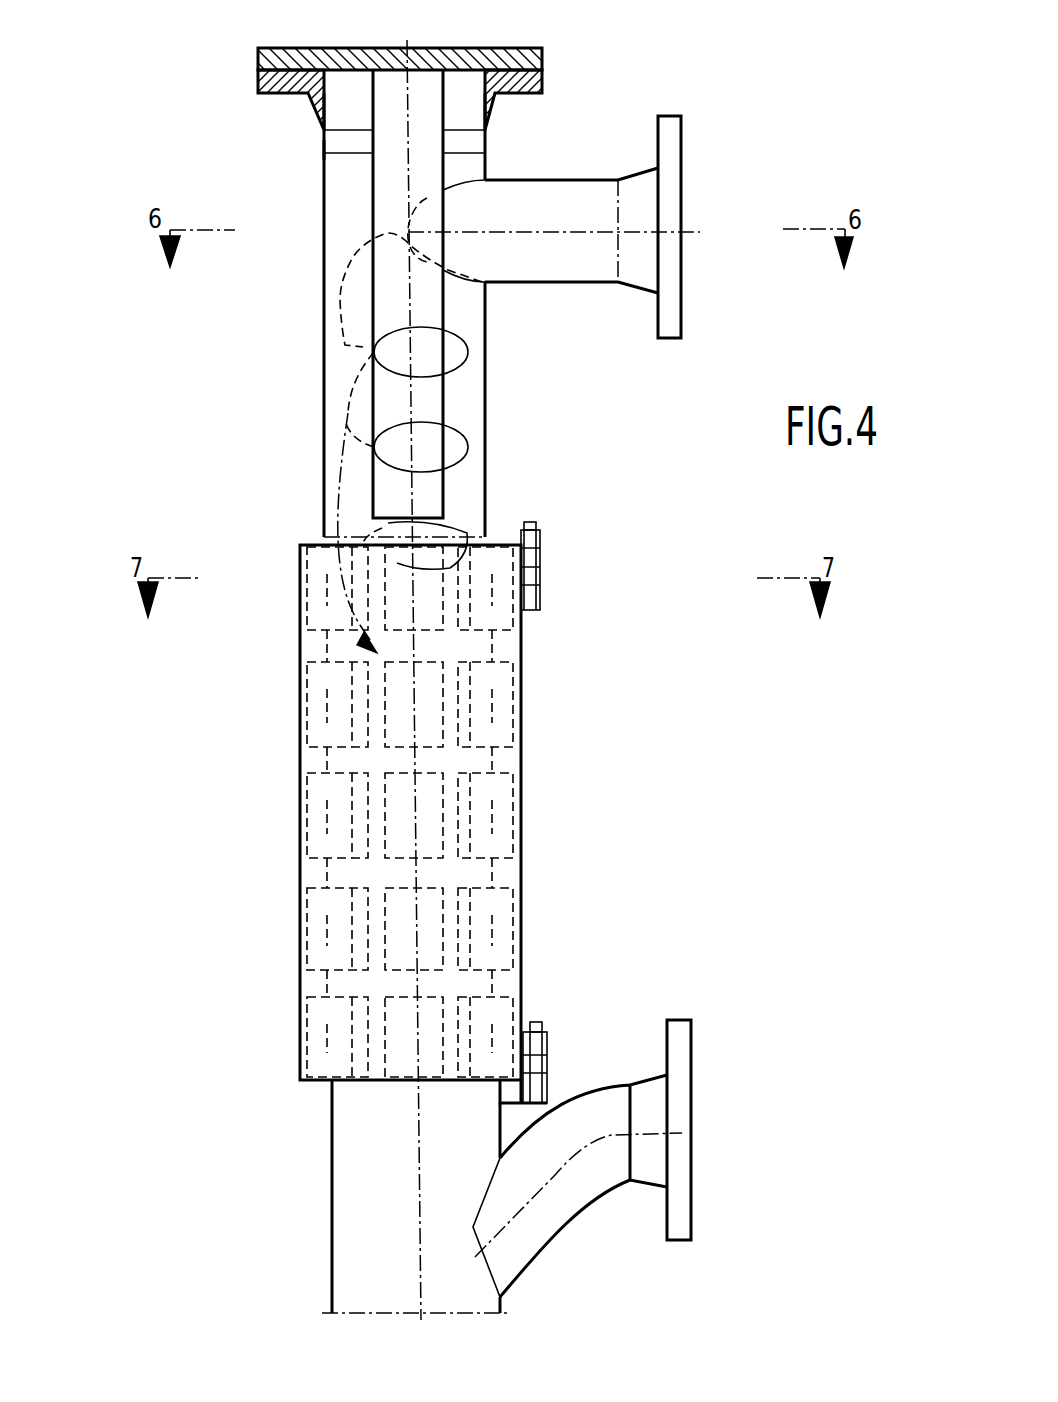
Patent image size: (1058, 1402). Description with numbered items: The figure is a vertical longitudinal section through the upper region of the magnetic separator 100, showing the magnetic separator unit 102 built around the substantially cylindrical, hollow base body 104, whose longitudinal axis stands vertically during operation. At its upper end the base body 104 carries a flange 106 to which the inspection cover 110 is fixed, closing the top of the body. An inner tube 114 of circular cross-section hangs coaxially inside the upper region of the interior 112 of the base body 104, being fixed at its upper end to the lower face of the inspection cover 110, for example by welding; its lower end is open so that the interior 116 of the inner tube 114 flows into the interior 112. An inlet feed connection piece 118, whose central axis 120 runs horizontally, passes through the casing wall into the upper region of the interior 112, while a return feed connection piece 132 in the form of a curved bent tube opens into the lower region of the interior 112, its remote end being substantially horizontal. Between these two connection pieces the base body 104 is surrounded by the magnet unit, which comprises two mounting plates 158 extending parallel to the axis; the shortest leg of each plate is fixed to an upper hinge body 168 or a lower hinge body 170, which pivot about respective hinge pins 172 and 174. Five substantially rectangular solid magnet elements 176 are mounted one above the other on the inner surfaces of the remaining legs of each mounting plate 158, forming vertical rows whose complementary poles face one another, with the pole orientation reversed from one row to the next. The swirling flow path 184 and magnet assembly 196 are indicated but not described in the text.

The magnetic separator 100 is at (248, 107).
The magnetic separator unit 102 is at (308, 146).
The base body 104 is at (323, 298).
The flange 106 is at (542, 80).
The inspection cover 110 is at (542, 52).
The interior 112 is at (350, 213).
The inner tube 114 is at (362, 390).
The interior of the inner tube 116 is at (385, 163).
The inlet feed connection piece 118 is at (548, 177).
The central axis 120 is at (607, 232).
The return feed connection piece 132 is at (597, 1180).
The mounting plate 158 is at (299, 860).
The upper hinge body 168 is at (543, 572).
The lower hinge body 170 is at (547, 1058).
The hinge pin 172 is at (530, 521).
The hinge pin 174 is at (537, 1022).
The magnet element 176 is at (312, 673).
The helical flow path 184 is at (453, 424).
The magnet assembly 196 is at (355, 812).